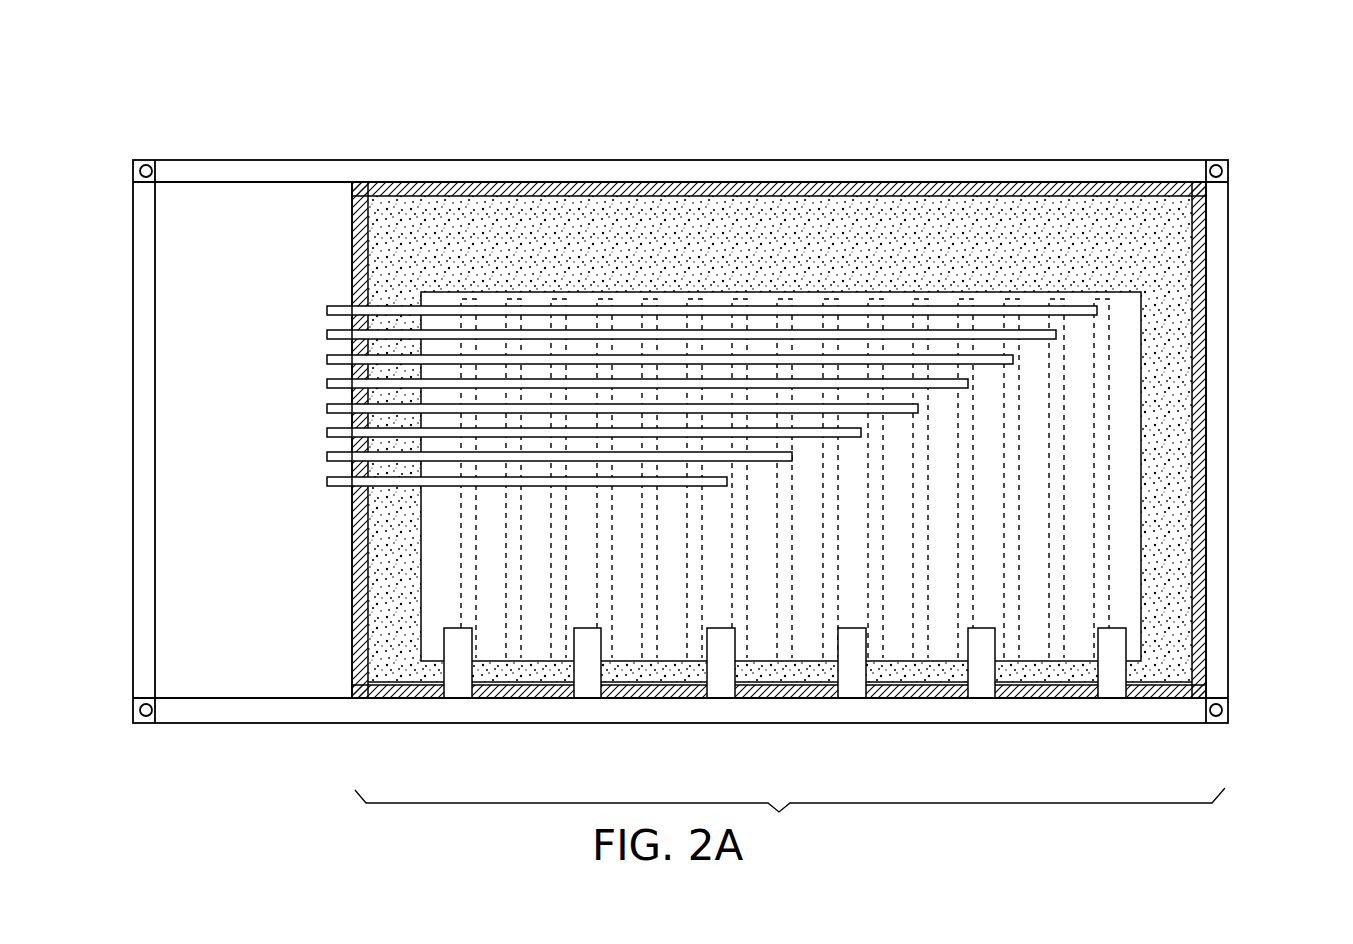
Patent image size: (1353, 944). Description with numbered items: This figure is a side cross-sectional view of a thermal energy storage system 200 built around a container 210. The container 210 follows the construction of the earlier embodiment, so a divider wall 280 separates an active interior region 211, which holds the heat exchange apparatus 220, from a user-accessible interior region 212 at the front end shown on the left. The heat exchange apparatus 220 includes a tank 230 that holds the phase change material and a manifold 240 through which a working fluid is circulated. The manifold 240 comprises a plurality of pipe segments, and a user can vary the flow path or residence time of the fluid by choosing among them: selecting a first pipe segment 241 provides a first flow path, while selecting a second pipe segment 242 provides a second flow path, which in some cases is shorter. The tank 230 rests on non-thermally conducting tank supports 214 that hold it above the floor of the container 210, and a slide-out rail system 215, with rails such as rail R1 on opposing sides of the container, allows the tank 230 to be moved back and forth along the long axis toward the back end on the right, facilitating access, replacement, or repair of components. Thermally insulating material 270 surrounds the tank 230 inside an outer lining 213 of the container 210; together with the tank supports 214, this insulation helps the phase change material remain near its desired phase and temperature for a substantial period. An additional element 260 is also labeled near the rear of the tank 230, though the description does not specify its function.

The thermal energy storage system 200 is at (125, 140).
The container 210 is at (1221, 160).
The lower portion of housing 211 is at (790, 815).
The empty accommodating space 212 is at (212, 496).
The outer lining 213 is at (1197, 545).
The tank supports 214 is at (457, 682).
The slide-out rail system 215 is at (905, 683).
The heat exchange apparatus 220 is at (1132, 394).
The tank 230 is at (853, 300).
The manifold 240 is at (659, 296).
The first pipe segment 241 is at (325, 310).
The second pipe segment 242 is at (326, 381).
The end plate 260 is at (1103, 352).
The thermally insulating material 270 is at (585, 237).
The partition wall 280 is at (348, 613).
The rail R1 is at (659, 688).